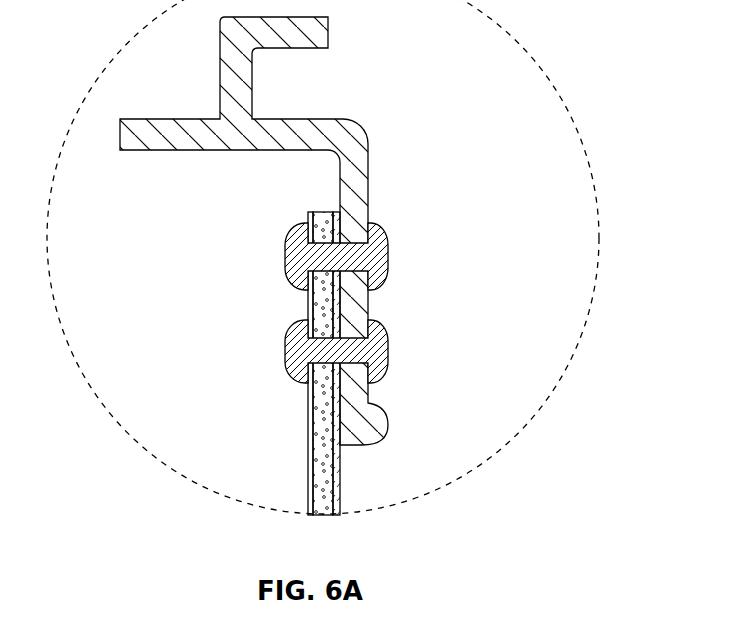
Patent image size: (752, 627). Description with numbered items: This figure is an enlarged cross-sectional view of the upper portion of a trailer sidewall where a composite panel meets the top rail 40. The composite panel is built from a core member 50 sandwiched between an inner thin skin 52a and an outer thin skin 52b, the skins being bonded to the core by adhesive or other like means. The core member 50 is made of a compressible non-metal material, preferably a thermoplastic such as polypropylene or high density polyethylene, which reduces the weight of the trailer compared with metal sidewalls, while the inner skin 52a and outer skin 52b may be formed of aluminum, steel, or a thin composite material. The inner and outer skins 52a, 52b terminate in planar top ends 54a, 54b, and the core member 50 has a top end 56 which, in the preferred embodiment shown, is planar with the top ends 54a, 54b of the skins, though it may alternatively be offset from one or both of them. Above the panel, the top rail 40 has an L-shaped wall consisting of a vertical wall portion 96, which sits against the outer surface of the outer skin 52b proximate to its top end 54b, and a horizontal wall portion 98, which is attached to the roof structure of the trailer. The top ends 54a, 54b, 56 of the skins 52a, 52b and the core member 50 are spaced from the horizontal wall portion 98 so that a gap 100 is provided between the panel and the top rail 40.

The top rail 40 is at (254, 231).
The horizontal wall portion 98 is at (133, 135).
The top end 56 is at (340, 185).
The vertical wall portion 96 is at (362, 178).
The gap 100 is at (312, 159).
The core member 50 is at (322, 374).
The inner thin skin 52a is at (310, 415).
The outer thin skin 52b is at (340, 490).
The top end 54a is at (311, 213).
The top end 54b is at (340, 200).